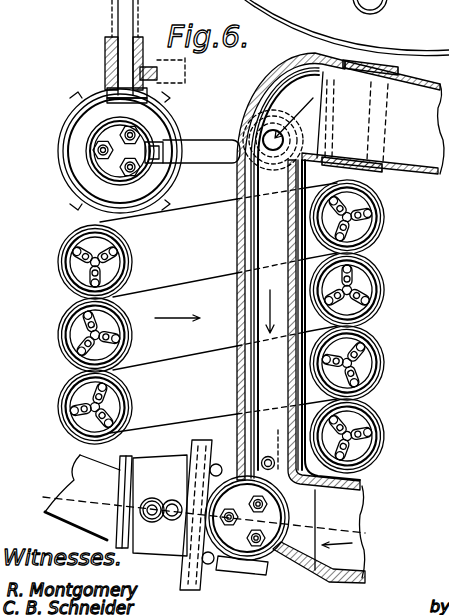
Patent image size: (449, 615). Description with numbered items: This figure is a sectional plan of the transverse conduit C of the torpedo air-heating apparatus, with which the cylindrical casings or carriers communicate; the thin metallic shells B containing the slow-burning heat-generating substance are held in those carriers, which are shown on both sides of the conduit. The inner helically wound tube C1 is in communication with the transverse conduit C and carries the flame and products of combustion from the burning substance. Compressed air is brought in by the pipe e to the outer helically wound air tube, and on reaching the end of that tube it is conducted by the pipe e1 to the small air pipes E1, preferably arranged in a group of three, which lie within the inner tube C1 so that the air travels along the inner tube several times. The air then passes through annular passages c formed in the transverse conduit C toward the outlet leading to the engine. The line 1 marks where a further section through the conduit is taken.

The pipe e is at (133, 20).
The inner helically wound tube C1 is at (240, 172).
The transverse conduit C is at (298, 271).
The annular passages c is at (295, 282).
The thin metallic shells B is at (412, 160).
The section line 1 is at (386, 534).
The pipe e1 is at (170, 500).
The small air pipes E1 is at (253, 507).